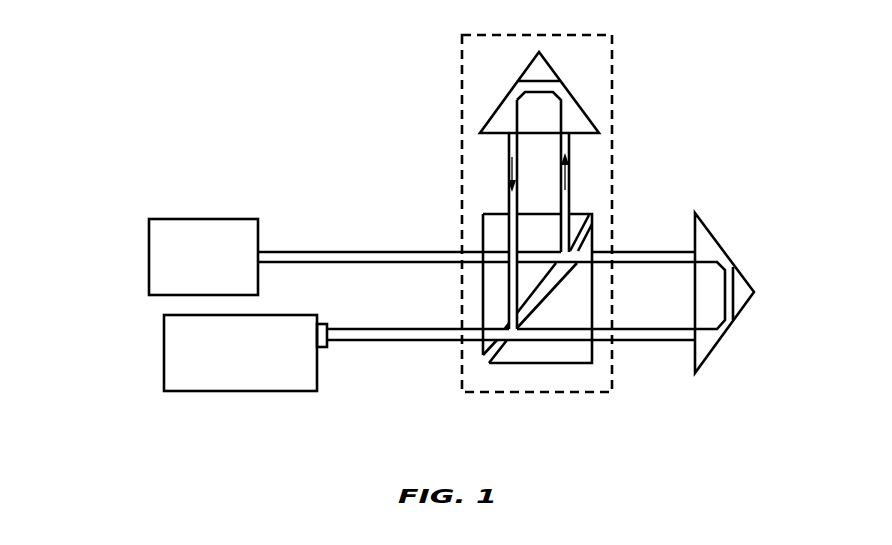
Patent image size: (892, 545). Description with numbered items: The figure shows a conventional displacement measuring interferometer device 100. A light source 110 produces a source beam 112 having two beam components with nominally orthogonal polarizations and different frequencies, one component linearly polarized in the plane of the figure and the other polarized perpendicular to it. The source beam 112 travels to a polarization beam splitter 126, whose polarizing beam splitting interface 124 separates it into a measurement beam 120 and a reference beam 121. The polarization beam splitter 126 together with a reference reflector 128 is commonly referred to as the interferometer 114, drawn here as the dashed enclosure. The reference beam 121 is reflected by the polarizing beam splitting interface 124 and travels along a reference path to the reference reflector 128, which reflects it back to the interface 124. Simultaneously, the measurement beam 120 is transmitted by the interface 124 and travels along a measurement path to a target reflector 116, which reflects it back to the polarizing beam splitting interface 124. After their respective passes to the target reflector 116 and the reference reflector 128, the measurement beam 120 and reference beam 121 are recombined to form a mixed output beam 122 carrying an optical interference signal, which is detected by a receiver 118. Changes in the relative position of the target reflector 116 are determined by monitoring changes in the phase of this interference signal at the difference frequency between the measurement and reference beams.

The interferometer device 100 is at (245, 93).
The light source 110 is at (149, 242).
The source beam 112 is at (297, 252).
The interferometer 114 is at (612, 57).
The target reflector 116 is at (722, 238).
The receiver 118 is at (233, 391).
The measurement beam 120 is at (657, 252).
The reference beam 121 is at (570, 150).
The mixed output beam 122 is at (423, 341).
The polarizing beam splitting interface 124 is at (592, 233).
The polarization beam splitter 126 is at (494, 214).
The reference reflector 128 is at (527, 68).